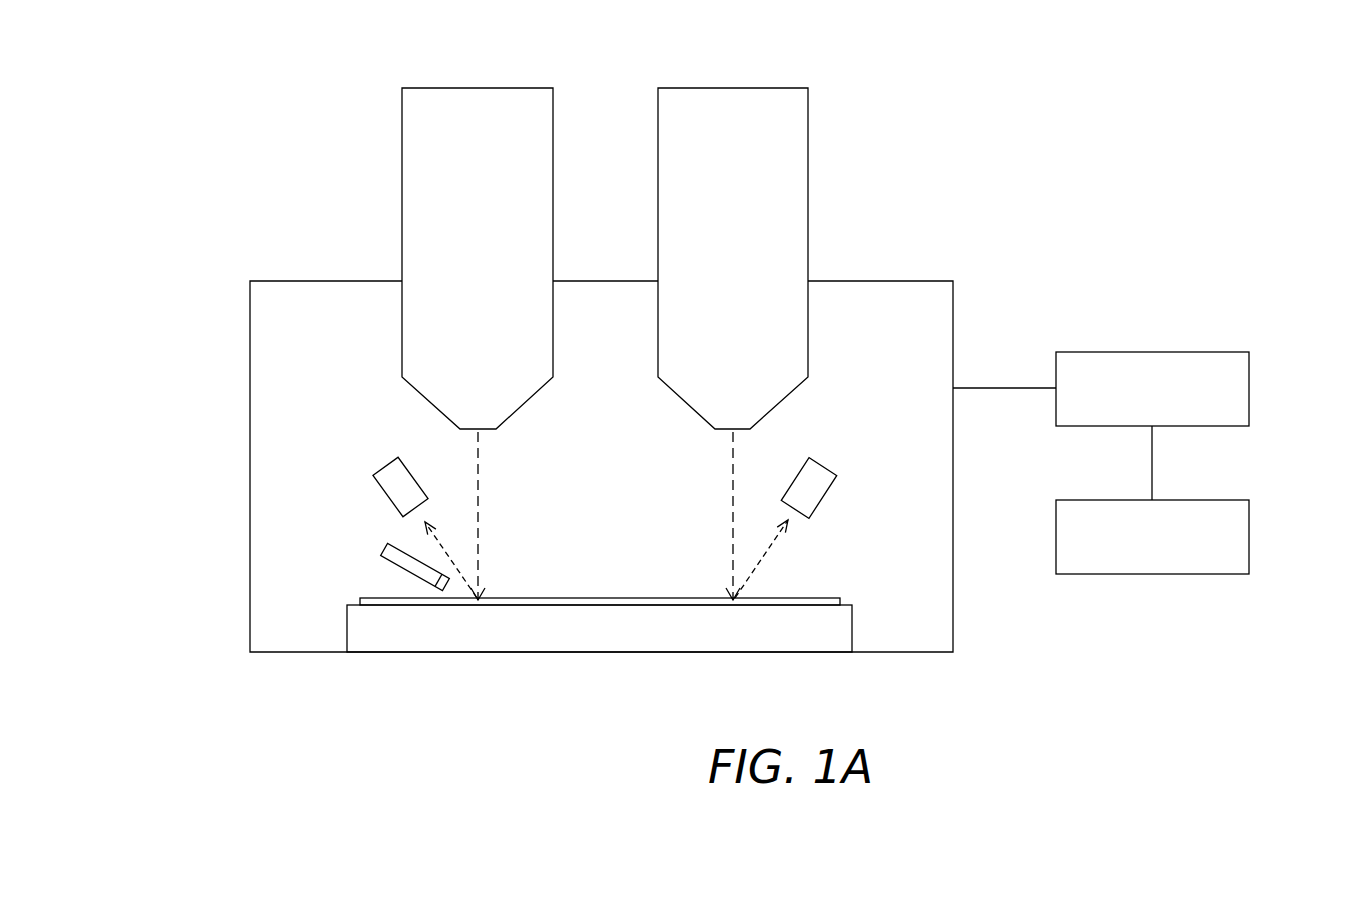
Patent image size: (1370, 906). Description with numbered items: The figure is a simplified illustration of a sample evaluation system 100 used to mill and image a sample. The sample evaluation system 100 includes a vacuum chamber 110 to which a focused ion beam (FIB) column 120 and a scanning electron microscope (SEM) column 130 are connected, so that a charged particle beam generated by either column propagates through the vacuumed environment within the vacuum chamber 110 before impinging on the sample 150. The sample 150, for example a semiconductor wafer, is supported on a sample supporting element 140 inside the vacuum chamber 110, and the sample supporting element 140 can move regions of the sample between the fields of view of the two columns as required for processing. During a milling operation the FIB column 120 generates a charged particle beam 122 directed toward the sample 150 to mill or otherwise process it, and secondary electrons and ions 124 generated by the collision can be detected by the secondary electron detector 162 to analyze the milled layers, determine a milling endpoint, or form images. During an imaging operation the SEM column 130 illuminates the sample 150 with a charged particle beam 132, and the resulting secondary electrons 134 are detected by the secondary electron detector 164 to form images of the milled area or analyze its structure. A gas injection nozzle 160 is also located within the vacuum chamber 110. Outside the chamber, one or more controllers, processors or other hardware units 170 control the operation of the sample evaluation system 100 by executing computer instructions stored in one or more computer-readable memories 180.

The sample evaluation system 100 is at (266, 102).
The vacuum chamber 110 is at (348, 321).
The focused ion beam (FIB) column 120 is at (553, 130).
The charged particle beam 122 is at (480, 495).
The secondary electrons and ions 124 is at (455, 565).
The scanning electron microscope (SEM) column 130 is at (808, 130).
The charged particle beam 132 is at (735, 473).
The secondary electrons 134 is at (755, 572).
The sample supporting element 140 is at (579, 641).
The sample 150 is at (842, 600).
The gas injection nozzle 160 is at (388, 543).
The secondary electron detector 162 is at (387, 462).
The secondary electron detector 164 is at (835, 468).
The hardware units 170 is at (1249, 368).
The computer-readable memories 180 is at (1249, 518).